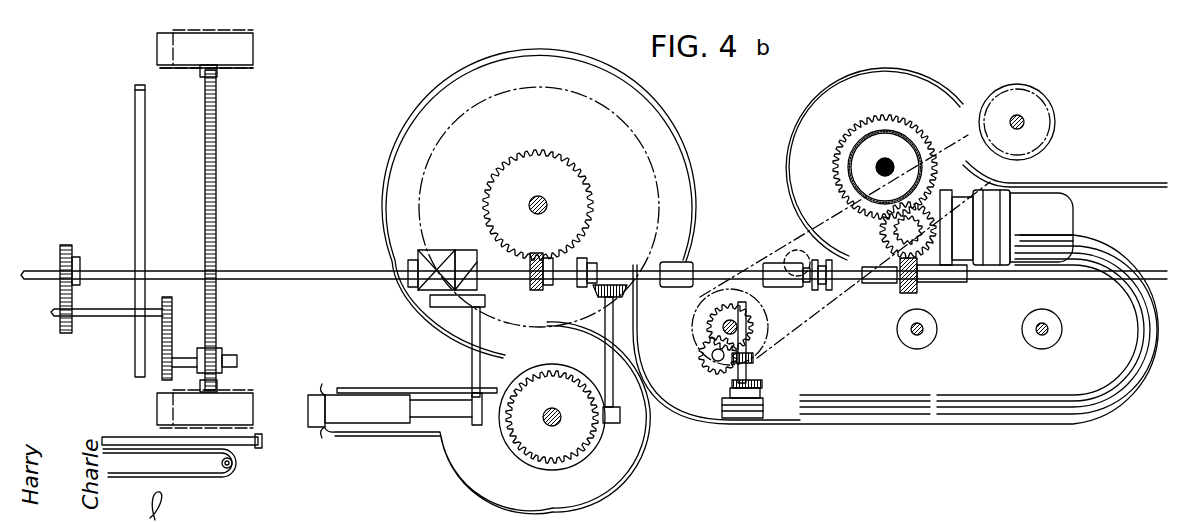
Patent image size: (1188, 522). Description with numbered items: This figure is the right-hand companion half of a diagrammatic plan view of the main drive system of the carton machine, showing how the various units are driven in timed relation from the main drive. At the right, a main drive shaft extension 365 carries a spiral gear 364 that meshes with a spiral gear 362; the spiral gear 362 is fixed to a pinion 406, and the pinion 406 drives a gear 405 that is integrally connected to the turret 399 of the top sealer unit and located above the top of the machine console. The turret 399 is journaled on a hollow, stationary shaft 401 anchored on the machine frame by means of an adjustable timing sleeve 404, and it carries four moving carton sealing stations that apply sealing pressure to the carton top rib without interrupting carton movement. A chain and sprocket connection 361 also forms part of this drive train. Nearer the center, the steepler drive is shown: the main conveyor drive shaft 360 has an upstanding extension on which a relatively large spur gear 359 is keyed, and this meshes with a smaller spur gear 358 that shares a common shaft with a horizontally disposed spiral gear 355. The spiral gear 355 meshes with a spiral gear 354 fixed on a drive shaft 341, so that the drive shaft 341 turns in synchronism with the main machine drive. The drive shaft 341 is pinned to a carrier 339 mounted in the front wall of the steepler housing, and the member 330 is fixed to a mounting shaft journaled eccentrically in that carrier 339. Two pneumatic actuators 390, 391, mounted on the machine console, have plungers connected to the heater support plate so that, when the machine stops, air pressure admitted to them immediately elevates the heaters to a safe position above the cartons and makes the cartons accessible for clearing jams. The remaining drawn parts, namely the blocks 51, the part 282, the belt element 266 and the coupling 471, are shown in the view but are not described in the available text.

The bearing block 51 is at (188, 71).
The support plate 282 is at (236, 68).
The belt drive 266 is at (252, 468).
The turret 399 is at (895, 135).
The gear 405 is at (833, 172).
The adjustable timing sleeve 404 is at (885, 160).
The hollow stationary shaft 401 is at (891, 173).
The spiral gear 362 is at (893, 236).
The pinion 406 is at (895, 250).
The main conveyor drive shaft 360 is at (718, 318).
The spur gear 359 is at (722, 325).
The spur gear 358 is at (700, 345).
The spiral gear 355 is at (705, 366).
The carrier 339 is at (732, 385).
The spiral gear 354 is at (753, 360).
The drive shaft 341 is at (748, 372).
The member 330 is at (758, 426).
The coupling 471 is at (804, 290).
The chain and sprocket connection 361 is at (842, 307).
The spiral gear 364 is at (917, 290).
The main drive shaft extension 365 is at (993, 287).
The pneumatic actuator 390 is at (914, 336).
The pneumatic actuator 391 is at (1036, 336).